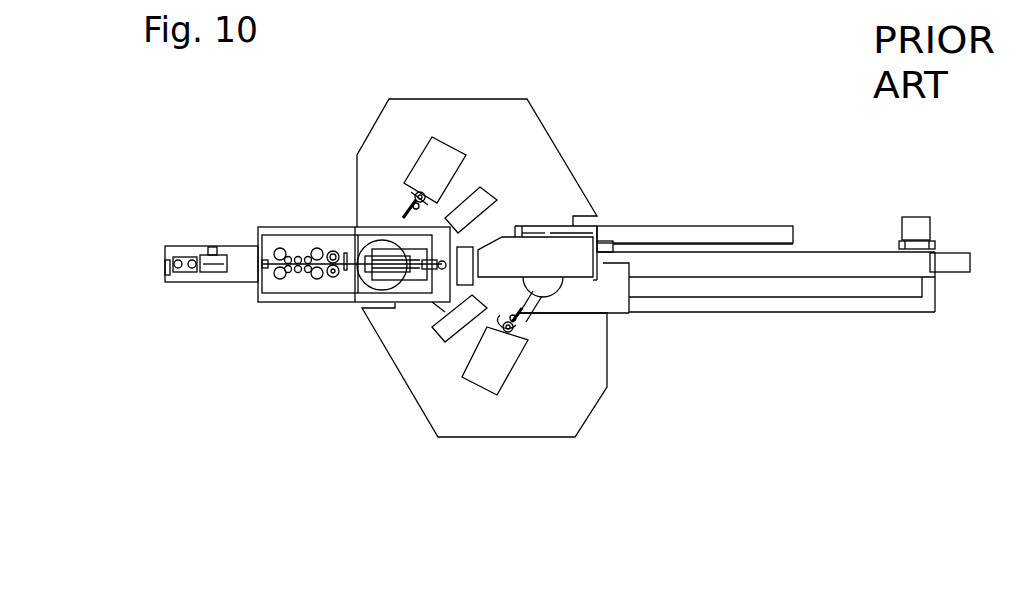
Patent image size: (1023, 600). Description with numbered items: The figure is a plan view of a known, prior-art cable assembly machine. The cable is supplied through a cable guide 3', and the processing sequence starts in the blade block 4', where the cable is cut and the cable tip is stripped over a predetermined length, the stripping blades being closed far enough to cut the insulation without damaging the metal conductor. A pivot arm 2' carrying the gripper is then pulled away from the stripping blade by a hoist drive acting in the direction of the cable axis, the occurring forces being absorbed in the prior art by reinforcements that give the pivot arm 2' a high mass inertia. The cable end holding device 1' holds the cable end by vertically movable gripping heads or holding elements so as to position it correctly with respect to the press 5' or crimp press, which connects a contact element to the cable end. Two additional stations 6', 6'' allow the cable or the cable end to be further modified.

The cable end holding device 1' is at (567, 302).
The pivot arm 2' is at (354, 204).
The cable guide 3' is at (304, 319).
The blade block 4' is at (409, 332).
The press 5' is at (466, 267).
The additional station 6' is at (490, 131).
The additional station 6'' is at (454, 369).